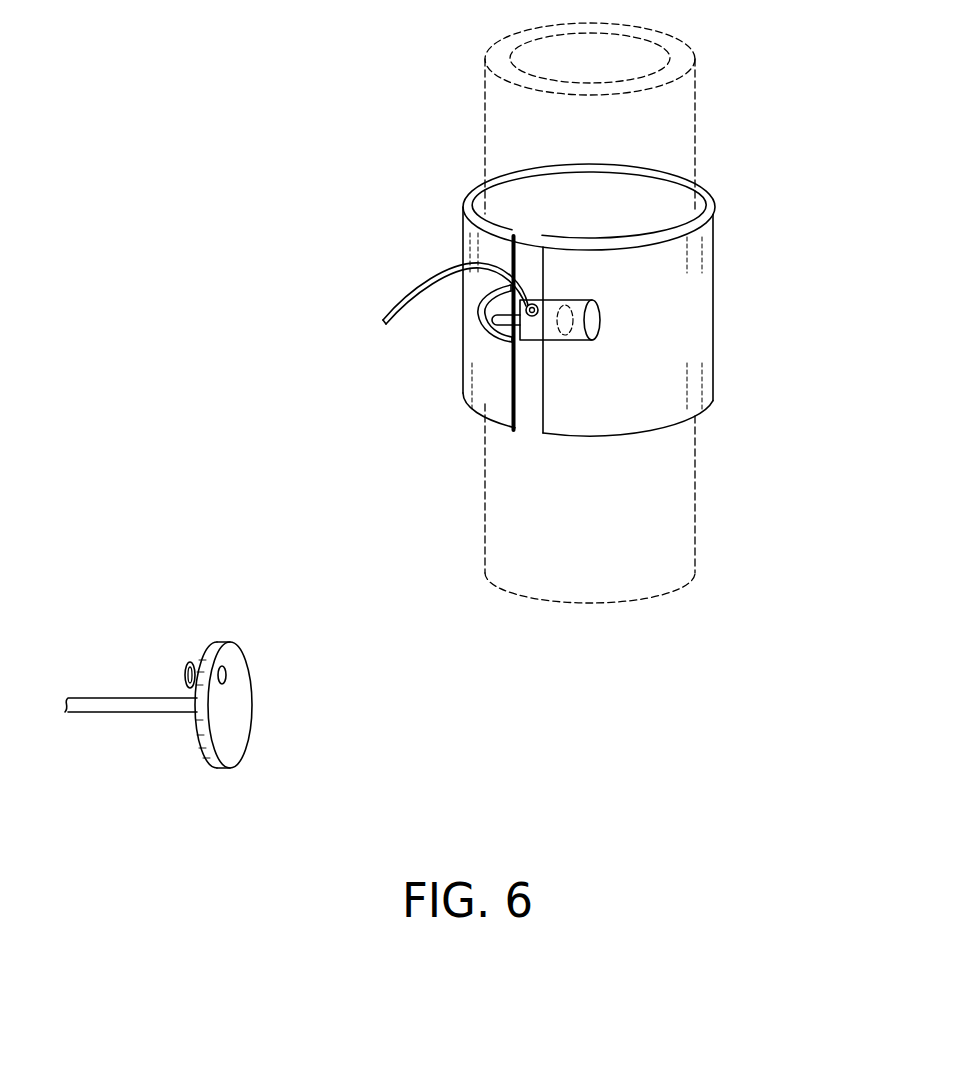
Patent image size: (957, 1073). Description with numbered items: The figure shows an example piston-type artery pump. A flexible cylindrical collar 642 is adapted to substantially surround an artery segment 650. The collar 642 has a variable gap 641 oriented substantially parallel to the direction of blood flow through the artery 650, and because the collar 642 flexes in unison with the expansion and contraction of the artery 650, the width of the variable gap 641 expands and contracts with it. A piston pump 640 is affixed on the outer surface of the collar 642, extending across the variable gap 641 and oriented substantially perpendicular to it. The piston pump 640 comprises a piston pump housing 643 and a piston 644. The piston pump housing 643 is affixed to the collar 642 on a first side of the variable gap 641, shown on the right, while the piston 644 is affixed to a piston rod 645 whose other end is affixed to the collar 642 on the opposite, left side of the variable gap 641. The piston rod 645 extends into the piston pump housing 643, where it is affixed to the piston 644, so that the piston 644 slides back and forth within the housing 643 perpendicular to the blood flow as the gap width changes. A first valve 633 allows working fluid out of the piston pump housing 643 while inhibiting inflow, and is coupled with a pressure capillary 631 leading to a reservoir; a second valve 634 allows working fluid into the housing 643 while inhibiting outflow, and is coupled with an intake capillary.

The pressure capillary 631 is at (388, 301).
The first valve 633 is at (530, 286).
The second valve 634 is at (187, 650).
The piston pump 640 is at (486, 347).
The variable gap 641 is at (526, 432).
The flexible cylindrical collar 642 is at (716, 243).
The piston pump housing 643 is at (607, 318).
The piston 644 is at (272, 703).
The piston rod 645 is at (103, 723).
The artery segment 650 is at (677, 103).